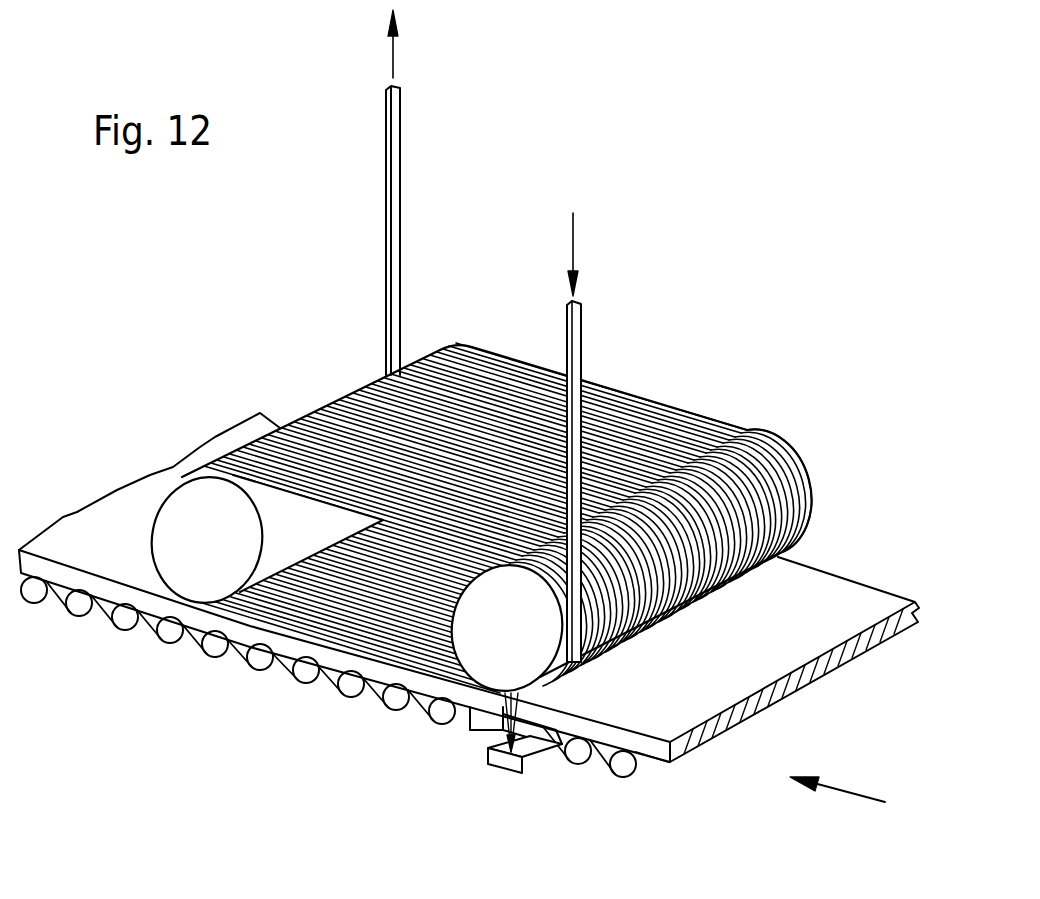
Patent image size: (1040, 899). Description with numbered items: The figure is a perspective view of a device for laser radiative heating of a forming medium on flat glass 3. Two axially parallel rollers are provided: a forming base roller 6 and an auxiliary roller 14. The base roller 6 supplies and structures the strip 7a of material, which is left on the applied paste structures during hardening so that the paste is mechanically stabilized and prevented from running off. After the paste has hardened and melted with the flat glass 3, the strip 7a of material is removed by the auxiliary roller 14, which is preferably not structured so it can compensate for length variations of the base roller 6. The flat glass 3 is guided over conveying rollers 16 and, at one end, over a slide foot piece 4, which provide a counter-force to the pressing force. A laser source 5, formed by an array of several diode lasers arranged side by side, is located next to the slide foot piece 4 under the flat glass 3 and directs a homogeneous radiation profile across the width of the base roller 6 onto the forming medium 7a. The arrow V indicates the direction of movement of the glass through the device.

The flat glass 3 is at (77, 530).
The slide foot piece 4 is at (473, 733).
The laser source 5 is at (512, 765).
The forming base roller 6 is at (533, 662).
The strip of material 7a is at (577, 340).
The auxiliary roller 14 is at (173, 512).
The conveying rollers 16 is at (304, 678).
The conveying direction V is at (862, 795).